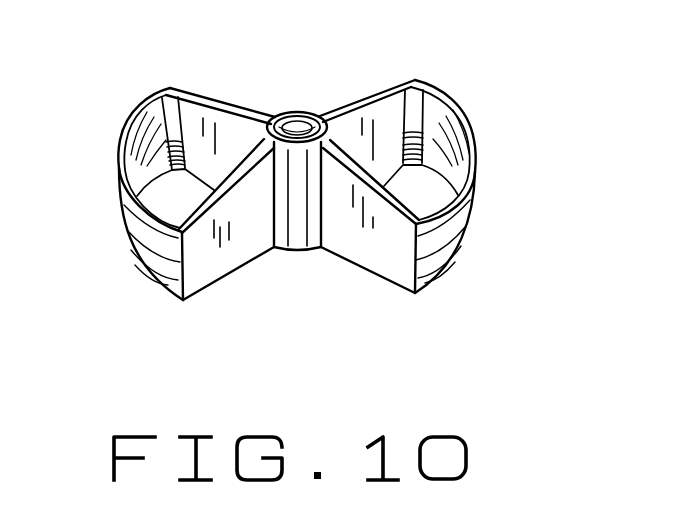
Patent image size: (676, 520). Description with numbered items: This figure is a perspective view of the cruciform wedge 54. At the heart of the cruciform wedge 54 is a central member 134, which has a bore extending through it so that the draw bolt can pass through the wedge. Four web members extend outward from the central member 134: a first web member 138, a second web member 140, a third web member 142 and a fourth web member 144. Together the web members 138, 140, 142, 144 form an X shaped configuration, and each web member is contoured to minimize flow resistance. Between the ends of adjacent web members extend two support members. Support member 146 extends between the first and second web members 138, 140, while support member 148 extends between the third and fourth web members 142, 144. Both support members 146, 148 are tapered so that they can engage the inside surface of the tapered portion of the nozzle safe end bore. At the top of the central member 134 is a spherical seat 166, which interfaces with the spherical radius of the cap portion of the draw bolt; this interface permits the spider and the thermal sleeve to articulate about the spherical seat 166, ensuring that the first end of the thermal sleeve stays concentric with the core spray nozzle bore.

The cruciform wedge 54 is at (481, 108).
The central member 134 is at (316, 246).
The first web member 138 is at (368, 100).
The second web member 140 is at (393, 262).
The third web member 142 is at (230, 278).
The fourth web member 144 is at (213, 97).
The support member 146 is at (470, 208).
The support member 148 is at (120, 156).
The spherical seat 166 is at (298, 108).